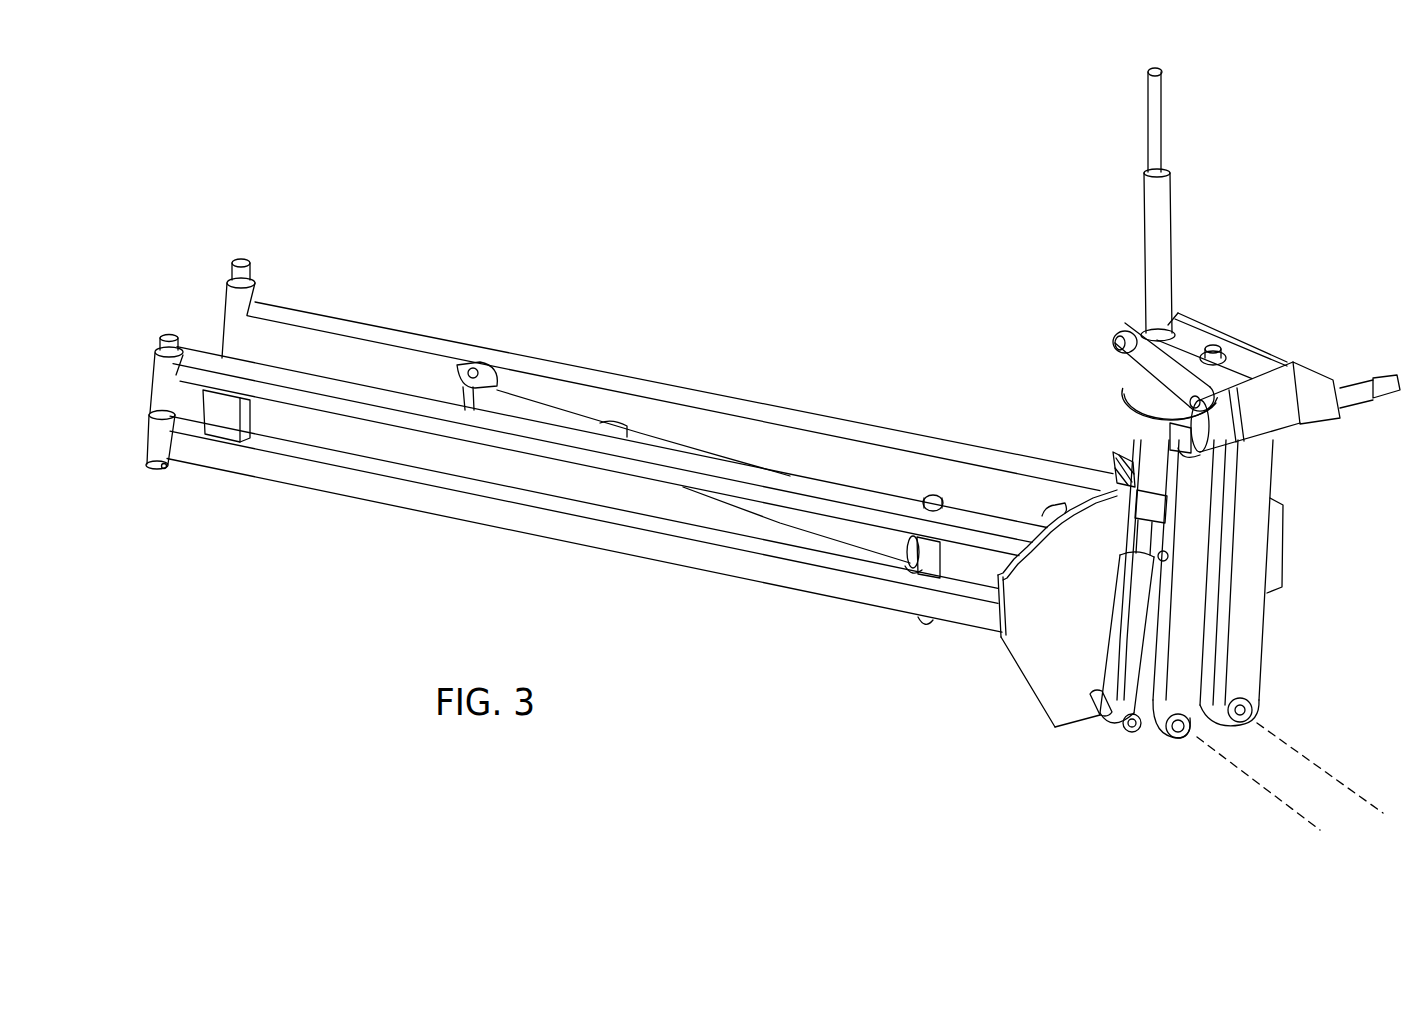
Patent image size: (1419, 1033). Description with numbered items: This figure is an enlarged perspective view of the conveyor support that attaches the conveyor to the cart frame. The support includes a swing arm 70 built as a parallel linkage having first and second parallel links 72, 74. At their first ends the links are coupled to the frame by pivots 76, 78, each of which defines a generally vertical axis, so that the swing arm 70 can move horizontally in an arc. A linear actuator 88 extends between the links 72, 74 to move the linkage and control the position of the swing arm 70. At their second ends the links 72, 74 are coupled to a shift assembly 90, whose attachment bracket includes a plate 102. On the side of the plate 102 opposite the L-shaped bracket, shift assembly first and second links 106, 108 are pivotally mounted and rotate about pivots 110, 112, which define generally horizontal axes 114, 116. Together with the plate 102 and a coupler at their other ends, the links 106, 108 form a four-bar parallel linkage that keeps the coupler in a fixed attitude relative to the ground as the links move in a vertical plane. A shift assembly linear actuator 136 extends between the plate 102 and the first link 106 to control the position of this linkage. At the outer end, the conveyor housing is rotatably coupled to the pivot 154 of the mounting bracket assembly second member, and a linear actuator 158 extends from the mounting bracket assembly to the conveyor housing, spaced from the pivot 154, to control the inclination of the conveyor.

The swing arm 70 is at (814, 336).
The first parallel link 72 is at (553, 363).
The second parallel link 74 is at (400, 507).
The pivot 76 is at (218, 318).
The pivot 78 is at (160, 397).
The linear actuator 88 is at (628, 433).
The shift assembly 90 is at (1288, 621).
The plate 102 is at (1022, 668).
The shift assembly first link 106 is at (1146, 739).
The shift assembly second link 108 is at (1247, 662).
The pivot 110 is at (1187, 737).
The pivot 112 is at (1253, 712).
The axis 114 is at (1253, 780).
The axis 116 is at (1328, 773).
The shift assembly linear actuator 136 is at (1120, 666).
The pivot 154 is at (1297, 413).
The linear actuator 158 is at (1163, 218).